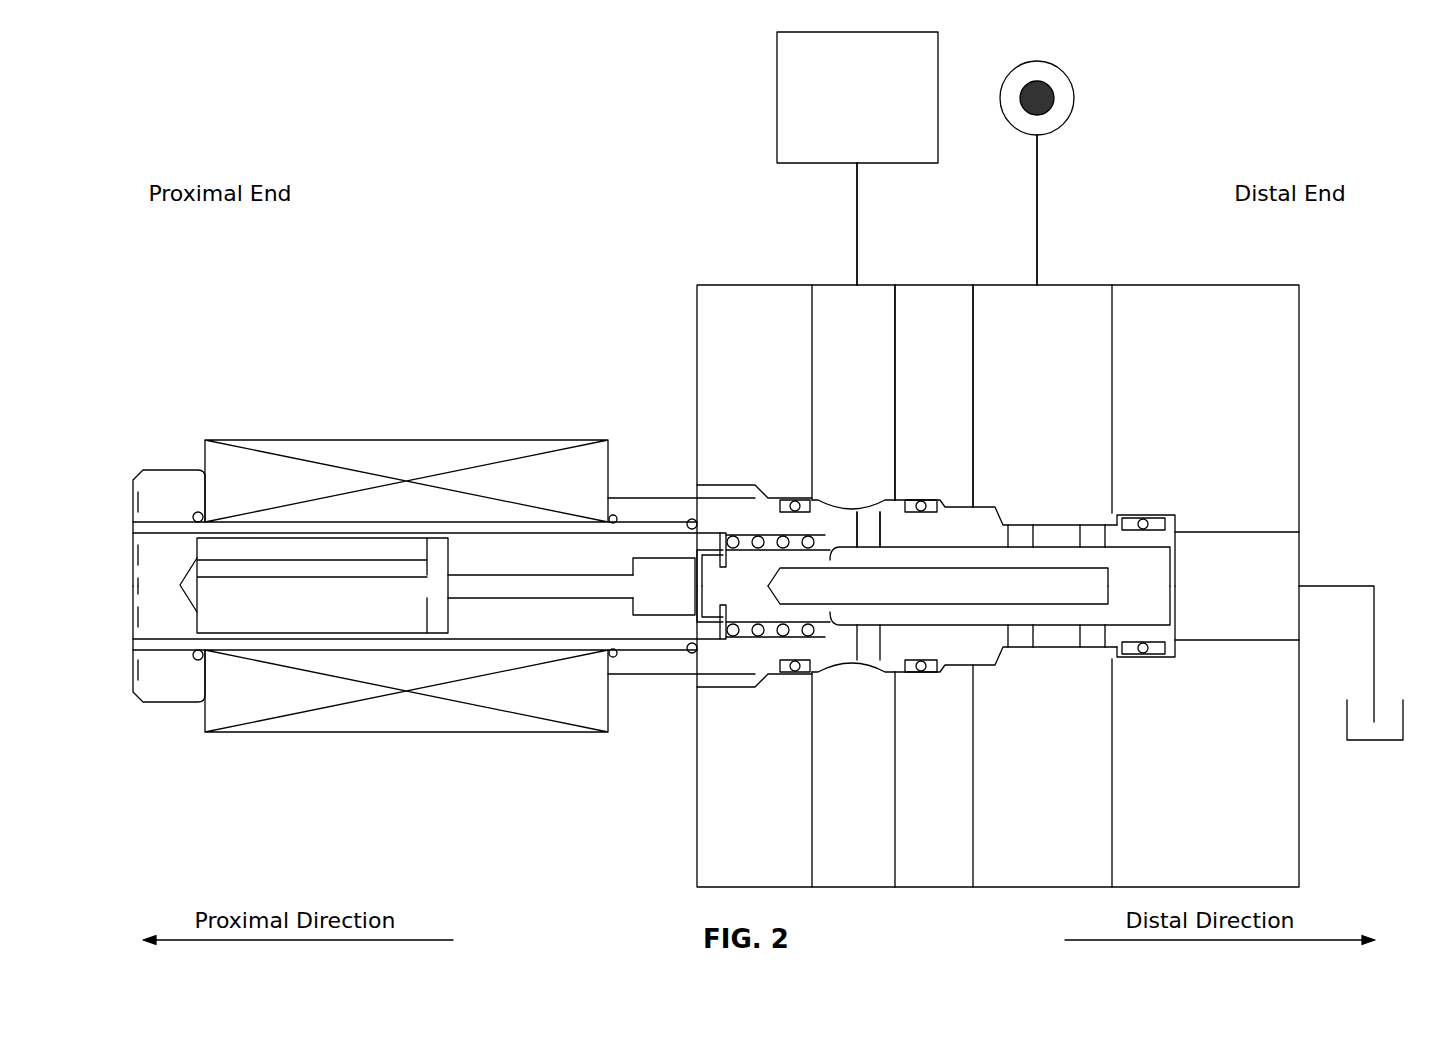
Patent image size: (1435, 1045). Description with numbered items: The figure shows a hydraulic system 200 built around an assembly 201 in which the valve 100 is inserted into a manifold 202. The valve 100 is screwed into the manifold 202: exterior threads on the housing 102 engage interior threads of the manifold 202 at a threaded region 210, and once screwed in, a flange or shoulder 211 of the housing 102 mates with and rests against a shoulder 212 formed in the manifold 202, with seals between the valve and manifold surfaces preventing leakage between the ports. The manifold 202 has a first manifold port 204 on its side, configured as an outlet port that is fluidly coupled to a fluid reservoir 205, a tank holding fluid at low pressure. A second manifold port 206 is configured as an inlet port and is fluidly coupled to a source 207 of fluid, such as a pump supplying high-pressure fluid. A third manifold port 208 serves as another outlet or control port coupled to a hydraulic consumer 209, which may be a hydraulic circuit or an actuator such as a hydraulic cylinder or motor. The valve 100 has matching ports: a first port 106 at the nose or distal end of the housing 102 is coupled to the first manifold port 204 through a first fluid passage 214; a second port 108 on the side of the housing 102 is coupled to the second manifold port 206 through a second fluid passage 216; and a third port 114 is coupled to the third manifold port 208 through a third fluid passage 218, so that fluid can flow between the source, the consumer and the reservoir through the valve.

The valve 100 is at (175, 464).
The housing 102 is at (643, 498).
The first port 106 is at (1180, 588).
The second port 108 is at (1048, 502).
The third port 114 is at (846, 486).
The hydraulic system 200 is at (699, 137).
The assembly 201 is at (647, 382).
The manifold 202 is at (702, 279).
The first manifold port 204 is at (1305, 570).
The fluid reservoir 205 is at (1360, 742).
The second manifold port 206 is at (1064, 278).
The source of fluid 207 is at (1076, 100).
The third manifold port 208 is at (888, 278).
The hydraulic consumer 209 is at (837, 137).
The threaded region 210 is at (963, 502).
The flange or shoulder 211 is at (885, 488).
The shoulder 212 is at (906, 492).
The first fluid passage 214 is at (1210, 576).
The second fluid passage 216 is at (1023, 331).
The third fluid passage 218 is at (835, 337).